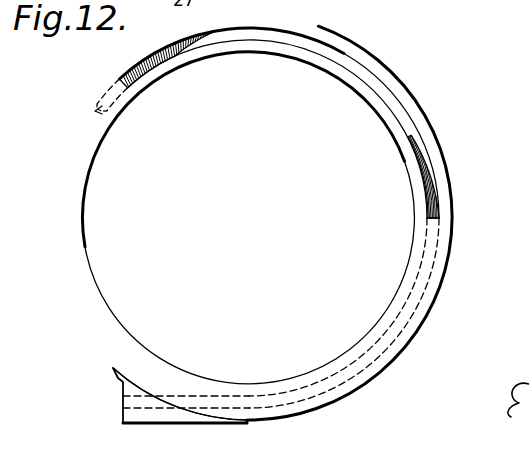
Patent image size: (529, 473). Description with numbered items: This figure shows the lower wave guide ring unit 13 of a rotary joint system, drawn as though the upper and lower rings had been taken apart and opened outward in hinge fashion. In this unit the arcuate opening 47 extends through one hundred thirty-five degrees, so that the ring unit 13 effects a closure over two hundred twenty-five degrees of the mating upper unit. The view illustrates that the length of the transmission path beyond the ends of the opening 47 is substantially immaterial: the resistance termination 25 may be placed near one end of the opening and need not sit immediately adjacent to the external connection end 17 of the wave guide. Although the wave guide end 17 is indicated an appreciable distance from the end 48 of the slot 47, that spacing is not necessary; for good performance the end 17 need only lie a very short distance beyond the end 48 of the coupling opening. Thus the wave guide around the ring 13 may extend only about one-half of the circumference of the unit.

The wave guide ring unit 13 is at (421, 109).
The arcuate opening 47 is at (210, 36).
The end of slot 48 is at (466, 190).
The resistance termination 25 is at (108, 109).
The external connection end 17 is at (124, 398).